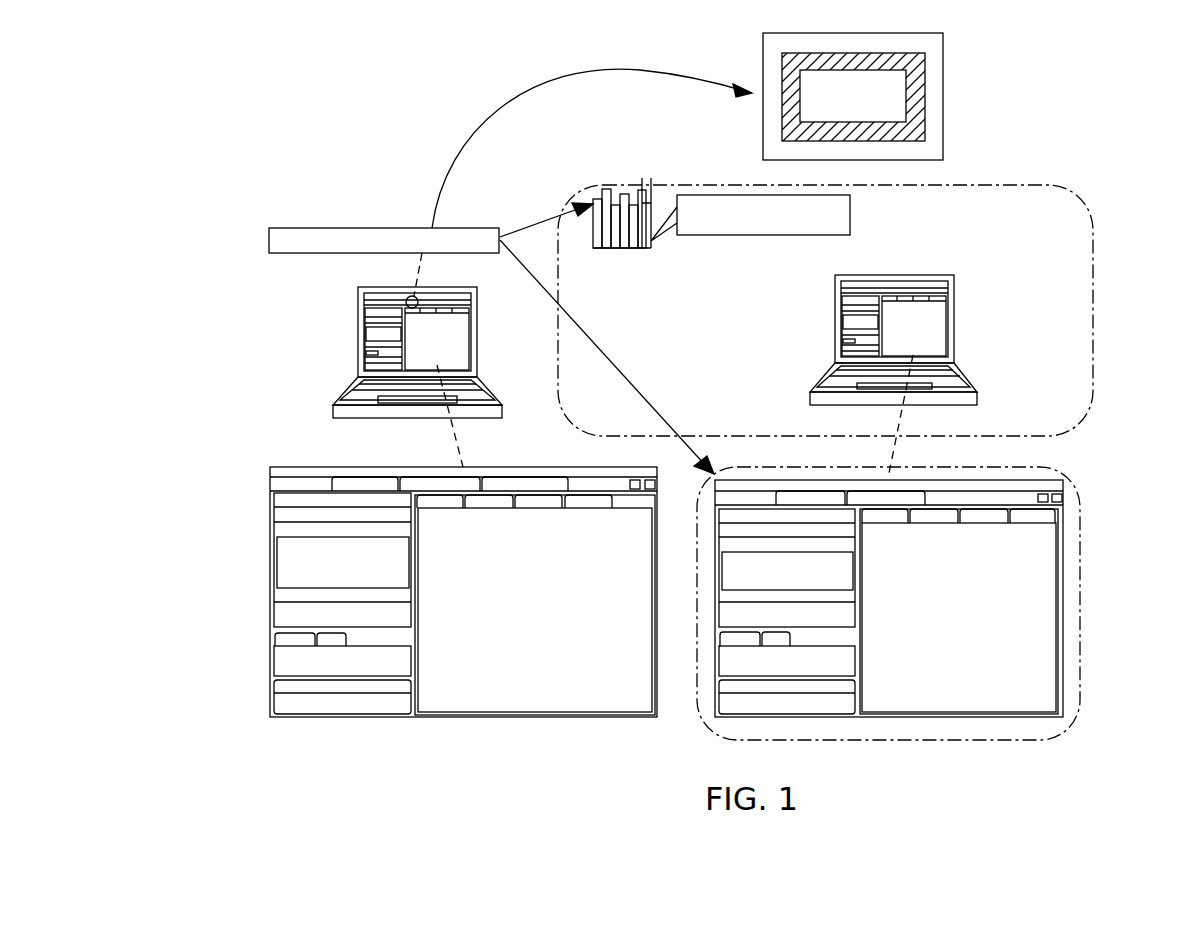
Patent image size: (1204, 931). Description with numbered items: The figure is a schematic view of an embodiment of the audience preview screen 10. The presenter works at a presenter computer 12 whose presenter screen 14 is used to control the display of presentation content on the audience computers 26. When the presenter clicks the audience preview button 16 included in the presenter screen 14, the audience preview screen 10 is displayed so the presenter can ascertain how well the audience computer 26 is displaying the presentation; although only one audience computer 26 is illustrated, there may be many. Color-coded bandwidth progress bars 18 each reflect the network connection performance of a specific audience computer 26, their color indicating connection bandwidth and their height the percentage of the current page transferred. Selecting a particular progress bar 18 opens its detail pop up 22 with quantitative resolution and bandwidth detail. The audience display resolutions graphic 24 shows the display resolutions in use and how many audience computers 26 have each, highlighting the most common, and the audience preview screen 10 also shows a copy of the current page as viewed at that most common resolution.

The audience preview screen 10 is at (1074, 552).
The presenter computer 12 is at (358, 332).
The presenter screen 14 is at (270, 590).
The audience preview button 16 is at (369, 228).
The bandwidth progress bars 18 is at (620, 190).
The detail pop up 22 is at (750, 235).
The audience display resolutions graphic 24 is at (943, 97).
The audience computer 26 is at (953, 310).